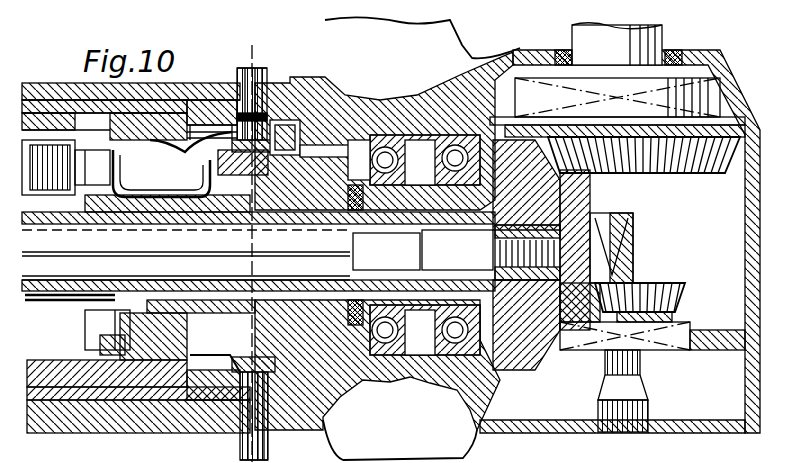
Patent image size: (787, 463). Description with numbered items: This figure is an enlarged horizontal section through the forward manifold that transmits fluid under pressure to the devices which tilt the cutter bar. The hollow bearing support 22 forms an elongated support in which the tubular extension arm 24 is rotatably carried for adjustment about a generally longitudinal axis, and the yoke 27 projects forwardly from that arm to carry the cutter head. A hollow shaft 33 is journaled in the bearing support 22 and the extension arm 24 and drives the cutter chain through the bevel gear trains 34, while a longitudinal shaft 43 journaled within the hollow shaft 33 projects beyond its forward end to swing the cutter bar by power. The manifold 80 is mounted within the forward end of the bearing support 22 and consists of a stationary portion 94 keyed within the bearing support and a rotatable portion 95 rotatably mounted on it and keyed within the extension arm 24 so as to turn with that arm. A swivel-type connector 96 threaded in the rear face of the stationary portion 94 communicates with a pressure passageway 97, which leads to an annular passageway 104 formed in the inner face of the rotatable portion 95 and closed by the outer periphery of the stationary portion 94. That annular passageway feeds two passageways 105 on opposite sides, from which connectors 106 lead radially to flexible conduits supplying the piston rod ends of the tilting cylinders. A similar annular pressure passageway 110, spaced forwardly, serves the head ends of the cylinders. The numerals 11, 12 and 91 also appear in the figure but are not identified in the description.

The housing 11 is at (97, 126).
The pin axis 12 is at (262, 46).
The hollow bearing support 22 is at (32, 100).
The tubular extension arm 24 is at (50, 155).
The yoke 27 is at (450, 38).
The hollow shaft 33 is at (293, 82).
The bevel gear trains 34 is at (692, 170).
The longitudinal shaft 43 is at (100, 298).
The manifold 80 is at (212, 375).
The spindle shaft 91 is at (78, 255).
The stationary portion 94 is at (90, 352).
The rotatable portion 95 is at (348, 411).
The connector 96 is at (80, 147).
The pressure passageway 97 is at (139, 130).
The annular passageway 104 is at (187, 140).
The passageways 105 is at (234, 115).
The connectors 106 is at (266, 68).
The annular pressure passageway 110 is at (290, 118).